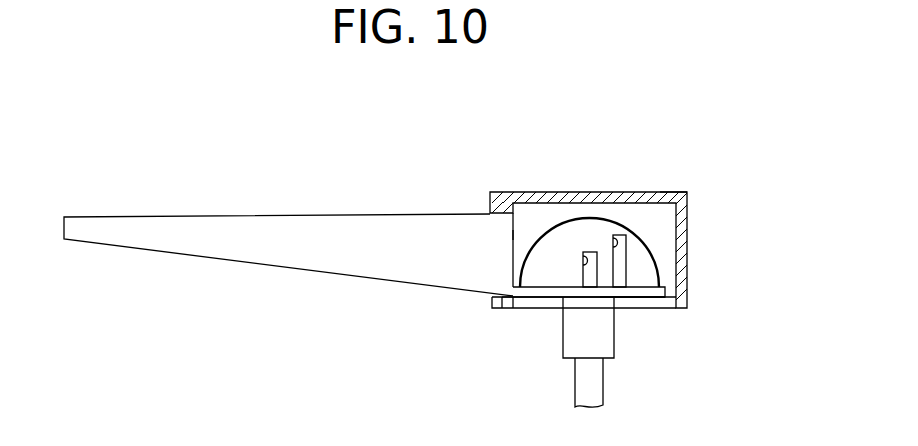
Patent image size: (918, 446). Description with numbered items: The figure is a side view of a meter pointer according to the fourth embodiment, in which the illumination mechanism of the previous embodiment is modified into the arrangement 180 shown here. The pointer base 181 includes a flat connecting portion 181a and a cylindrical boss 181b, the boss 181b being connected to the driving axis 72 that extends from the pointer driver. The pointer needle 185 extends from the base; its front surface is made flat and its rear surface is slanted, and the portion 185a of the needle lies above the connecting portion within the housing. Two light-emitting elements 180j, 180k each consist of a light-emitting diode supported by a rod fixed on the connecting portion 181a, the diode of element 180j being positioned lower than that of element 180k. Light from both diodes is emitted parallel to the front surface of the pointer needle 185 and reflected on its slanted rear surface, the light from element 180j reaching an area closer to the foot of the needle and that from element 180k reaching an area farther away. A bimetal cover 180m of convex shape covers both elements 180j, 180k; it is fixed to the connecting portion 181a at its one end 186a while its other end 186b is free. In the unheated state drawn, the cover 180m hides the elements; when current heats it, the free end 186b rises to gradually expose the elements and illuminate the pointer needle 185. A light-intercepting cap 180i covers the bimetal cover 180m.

The driving axis 72 is at (603, 378).
The light emitting unit 180 is at (586, 153).
The light-intercepting cap 180i is at (668, 191).
The light-emitting element 180j is at (575, 274).
The light-emitting element 180k is at (619, 268).
The bimetal cover 180m is at (657, 229).
The pointer base 181 is at (543, 302).
The connecting portion 181a is at (635, 293).
The cylindrical boss 181b is at (602, 338).
The pointer needle 185 is at (287, 216).
The arm tip 185a is at (514, 233).
The one end of bimetal cover 186a is at (671, 284).
The free end of bimetal cover 186b is at (583, 275).